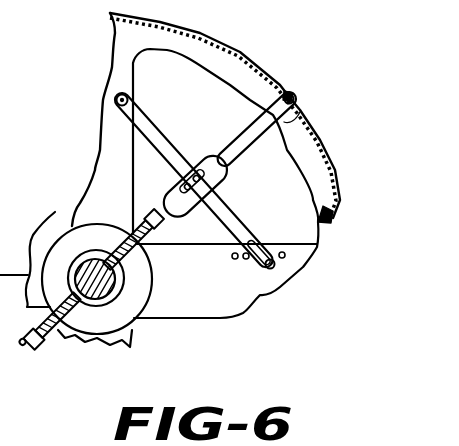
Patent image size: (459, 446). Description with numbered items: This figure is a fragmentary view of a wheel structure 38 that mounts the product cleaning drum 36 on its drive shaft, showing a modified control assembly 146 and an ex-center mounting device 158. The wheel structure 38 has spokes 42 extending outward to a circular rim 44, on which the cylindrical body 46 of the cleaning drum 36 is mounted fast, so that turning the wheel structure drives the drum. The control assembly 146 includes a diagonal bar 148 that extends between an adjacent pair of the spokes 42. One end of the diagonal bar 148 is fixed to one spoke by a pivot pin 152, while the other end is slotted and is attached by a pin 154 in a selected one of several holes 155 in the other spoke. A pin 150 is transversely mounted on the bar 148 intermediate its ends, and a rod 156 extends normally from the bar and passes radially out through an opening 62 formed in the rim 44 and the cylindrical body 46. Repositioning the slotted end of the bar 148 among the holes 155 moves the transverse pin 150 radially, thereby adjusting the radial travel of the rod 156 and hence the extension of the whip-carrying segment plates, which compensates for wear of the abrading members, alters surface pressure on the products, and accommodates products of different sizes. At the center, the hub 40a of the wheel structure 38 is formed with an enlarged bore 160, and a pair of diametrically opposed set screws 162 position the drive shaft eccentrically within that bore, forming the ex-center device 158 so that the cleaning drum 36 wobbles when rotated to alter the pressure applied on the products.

The product cleaning drum 36 is at (261, 321).
The wheel structure 38 is at (210, 56).
The hub 40a is at (143, 320).
The spokes 42 is at (113, 67).
The circular rim 44 is at (321, 148).
The cylindrical body 46 is at (340, 165).
The opening 62 is at (294, 113).
The control assembly 146 is at (232, 128).
The diagonal bar 148 is at (130, 131).
The pin 150 is at (221, 187).
The pivot pin 152 is at (116, 101).
The pin 154 is at (262, 280).
The holes 155 is at (234, 259).
The rod 156 is at (233, 152).
The ex-center device 158 is at (96, 322).
The enlarged bore 160 is at (70, 224).
The set screws 162 is at (160, 230).